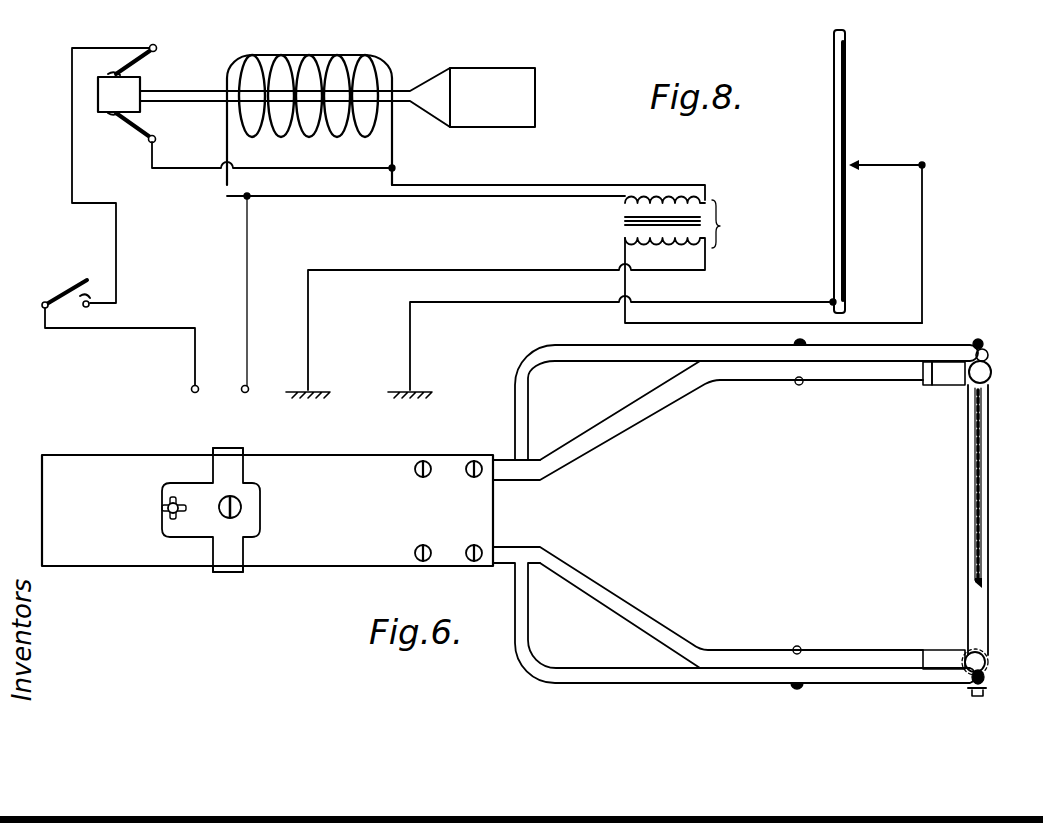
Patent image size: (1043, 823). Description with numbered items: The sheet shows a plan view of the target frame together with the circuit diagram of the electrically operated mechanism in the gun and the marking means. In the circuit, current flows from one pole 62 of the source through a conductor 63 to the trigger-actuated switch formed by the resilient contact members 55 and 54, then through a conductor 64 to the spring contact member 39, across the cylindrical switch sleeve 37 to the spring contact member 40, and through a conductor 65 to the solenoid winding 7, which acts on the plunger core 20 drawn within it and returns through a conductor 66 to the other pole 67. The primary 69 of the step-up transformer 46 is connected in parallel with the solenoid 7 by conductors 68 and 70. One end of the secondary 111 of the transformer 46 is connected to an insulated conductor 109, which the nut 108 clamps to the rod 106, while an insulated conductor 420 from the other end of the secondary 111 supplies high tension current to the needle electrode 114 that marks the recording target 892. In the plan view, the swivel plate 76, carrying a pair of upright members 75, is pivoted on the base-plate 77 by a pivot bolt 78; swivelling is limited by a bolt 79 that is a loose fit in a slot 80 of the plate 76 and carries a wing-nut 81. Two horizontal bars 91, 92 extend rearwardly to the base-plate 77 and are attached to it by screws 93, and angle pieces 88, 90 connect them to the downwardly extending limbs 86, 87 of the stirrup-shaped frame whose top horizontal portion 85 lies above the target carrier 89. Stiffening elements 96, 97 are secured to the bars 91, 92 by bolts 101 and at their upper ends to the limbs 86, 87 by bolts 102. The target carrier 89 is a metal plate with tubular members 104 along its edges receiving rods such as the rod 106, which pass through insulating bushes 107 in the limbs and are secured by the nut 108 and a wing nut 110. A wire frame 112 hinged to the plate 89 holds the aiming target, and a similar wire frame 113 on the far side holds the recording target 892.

In FIG. 8, the solenoid winding 7 is at (333, 128).
In FIG. 8, the plunger core 20 is at (518, 128).
In FIG. 8, the metal sleeve 37 is at (100, 112).
In FIG. 8, the spring contact member 39 is at (142, 67).
In FIG. 8, the spring contact member 40 is at (148, 128).
In FIG. 8, the step-up transformer 46 is at (686, 224).
In FIG. 8, the resilient contact member 54 is at (78, 318).
In FIG. 8, the resilient contact member 55 is at (66, 292).
In FIG. 8, the pole 62 is at (194, 396).
In FIG. 8, the conductor 63 is at (158, 328).
In FIG. 8, the conductor 64 is at (73, 196).
In FIG. 8, the conductor 65 is at (207, 168).
In FIG. 8, the conductor 66 is at (228, 200).
In FIG. 8, the pole 67 is at (245, 396).
In FIG. 8, the conductor 68 is at (588, 184).
In FIG. 8, the primary 69 is at (659, 200).
In FIG. 8, the conductor 70 is at (590, 197).
In FIG. 6, the upright member 75 is at (243, 451).
In FIG. 6, the plate 76 is at (250, 522).
In FIG. 6, the base-plate 77 is at (352, 518).
In FIG. 6, the pivot bolt 78 is at (238, 500).
In FIG. 6, the bolt 79 is at (163, 505).
In FIG. 6, the slot 80 is at (173, 496).
In FIG. 6, the wing-nut 81 is at (166, 512).
In FIG. 6, the top horizontal portion 85 is at (968, 595).
In FIG. 6, the downwardly extending limb 86 is at (972, 655).
In FIG. 6, the downwardly extending limb 87 is at (991, 378).
In FIG. 6, the angle piece 88 is at (937, 381).
In FIG. 8, the target carrier 89 is at (834, 172).
In FIG. 6, the target carrier 89 is at (975, 500).
In FIG. 8, the recording target 892 is at (846, 118).
In FIG. 6, the angle piece 90 is at (935, 648).
In FIG. 6, the horizontal bar 91 is at (737, 655).
In FIG. 6, the horizontal bar 92 is at (767, 370).
In FIG. 6, the screw 93 is at (470, 545).
In FIG. 6, the stiffening element 96 is at (586, 357).
In FIG. 6, the stiffening element 97 is at (580, 668).
In FIG. 6, the bolt 101 is at (802, 385).
In FIG. 6, the bolt 102 is at (976, 342).
In FIG. 6, the tubular member 104 is at (972, 556).
In FIG. 6, the rod 106 is at (978, 685).
In FIG. 6, the insulating bush 107 is at (972, 387).
In FIG. 6, the nut 108 is at (975, 694).
In FIG. 8, the insulated conductor 109 is at (770, 302).
In FIG. 6, the wing nut 110 is at (970, 688).
In FIG. 8, the secondary 111 is at (681, 245).
In FIG. 6, the wire frame 112 is at (974, 449).
In FIG. 6, the wire frame 113 is at (974, 468).
In FIG. 8, the needle electrode 114 is at (902, 164).
In FIG. 8, the insulated conductor 420 is at (925, 240).